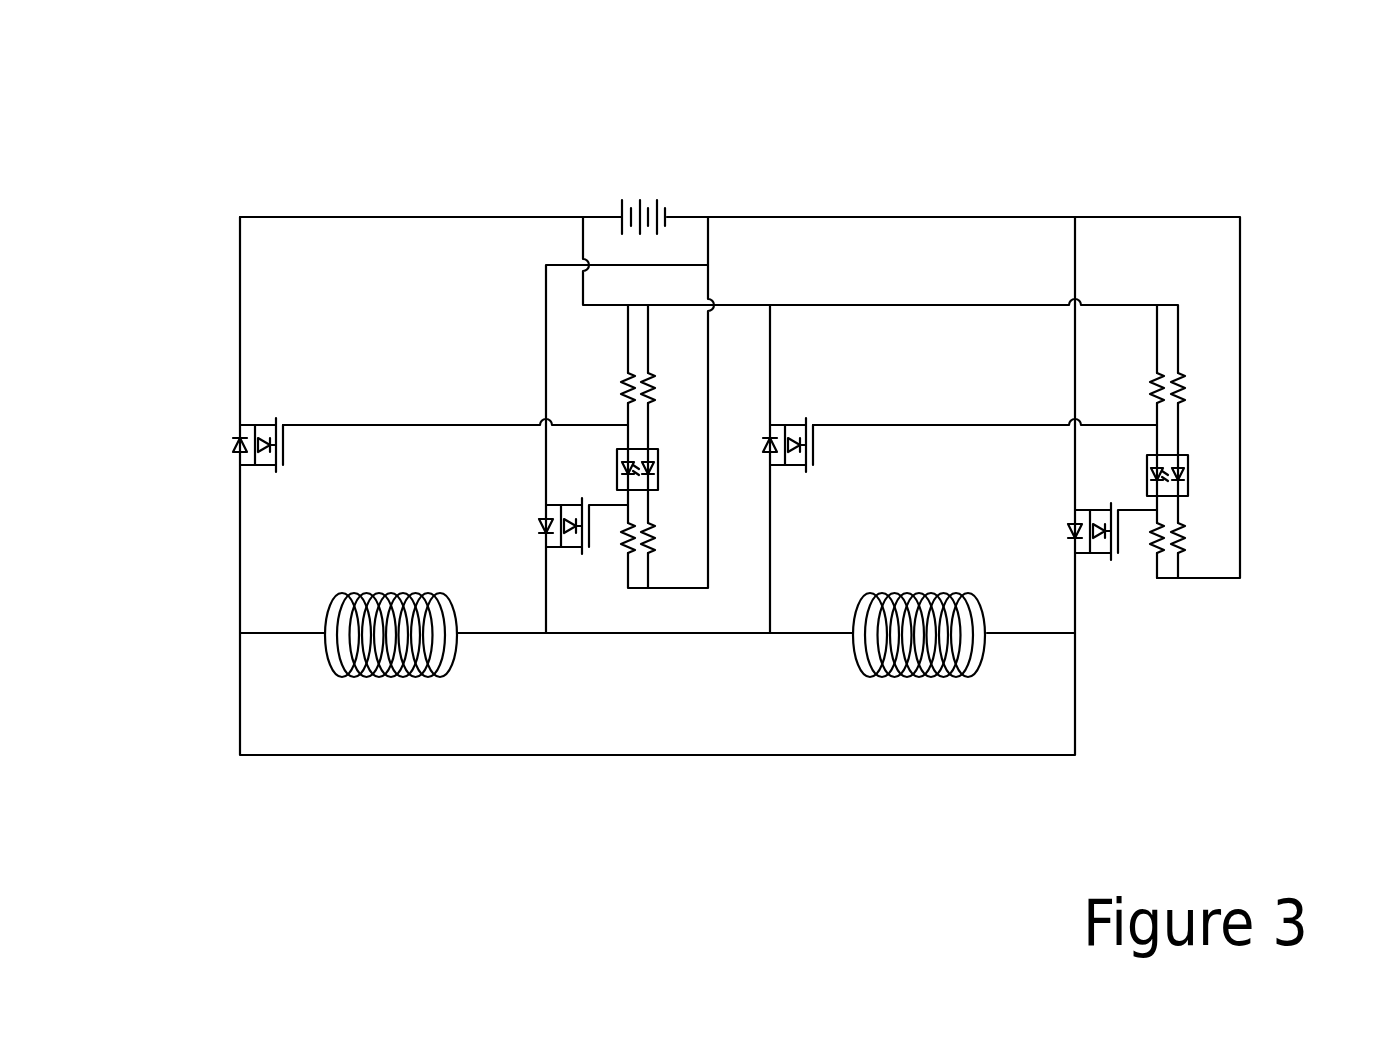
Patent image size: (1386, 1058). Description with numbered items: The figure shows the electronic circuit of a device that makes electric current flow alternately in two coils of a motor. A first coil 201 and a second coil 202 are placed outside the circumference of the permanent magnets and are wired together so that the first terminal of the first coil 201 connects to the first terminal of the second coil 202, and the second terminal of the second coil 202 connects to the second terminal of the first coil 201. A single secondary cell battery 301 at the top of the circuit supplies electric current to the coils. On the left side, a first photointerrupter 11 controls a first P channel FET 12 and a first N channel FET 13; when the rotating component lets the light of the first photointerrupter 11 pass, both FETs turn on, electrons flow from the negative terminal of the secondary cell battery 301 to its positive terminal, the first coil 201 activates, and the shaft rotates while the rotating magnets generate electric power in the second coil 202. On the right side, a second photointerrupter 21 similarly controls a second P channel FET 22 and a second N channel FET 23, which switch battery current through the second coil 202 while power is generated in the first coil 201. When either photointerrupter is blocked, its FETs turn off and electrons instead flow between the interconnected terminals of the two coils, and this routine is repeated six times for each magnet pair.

The secondary cell battery 301 is at (647, 192).
The first photointerrupter 11 is at (607, 457).
The first P channel FET 12 is at (255, 413).
The first N channel FET 13 is at (530, 520).
The second photointerrupter 21 is at (1192, 450).
The second P channel FET 22 is at (793, 415).
The second N channel FET 23 is at (1087, 500).
The first coil 201 is at (385, 687).
The second coil 202 is at (923, 687).